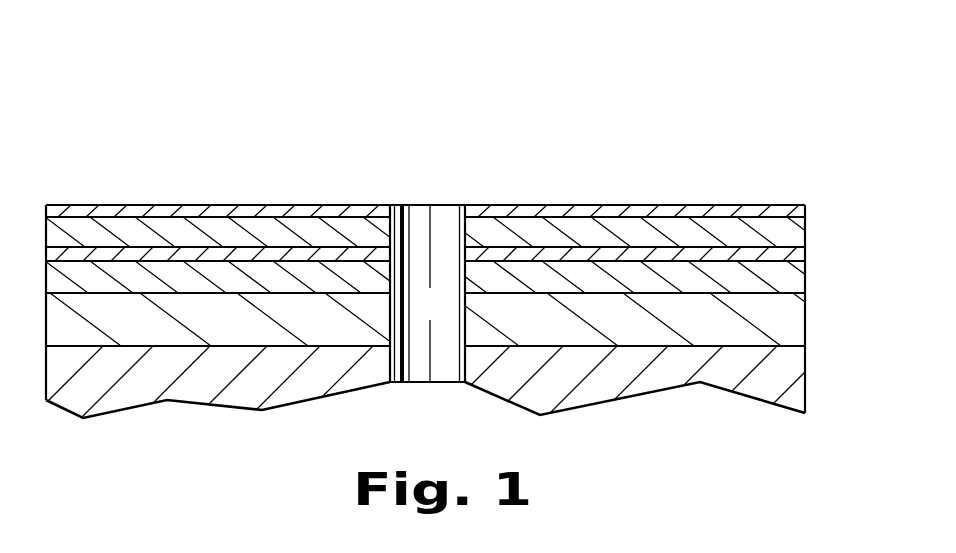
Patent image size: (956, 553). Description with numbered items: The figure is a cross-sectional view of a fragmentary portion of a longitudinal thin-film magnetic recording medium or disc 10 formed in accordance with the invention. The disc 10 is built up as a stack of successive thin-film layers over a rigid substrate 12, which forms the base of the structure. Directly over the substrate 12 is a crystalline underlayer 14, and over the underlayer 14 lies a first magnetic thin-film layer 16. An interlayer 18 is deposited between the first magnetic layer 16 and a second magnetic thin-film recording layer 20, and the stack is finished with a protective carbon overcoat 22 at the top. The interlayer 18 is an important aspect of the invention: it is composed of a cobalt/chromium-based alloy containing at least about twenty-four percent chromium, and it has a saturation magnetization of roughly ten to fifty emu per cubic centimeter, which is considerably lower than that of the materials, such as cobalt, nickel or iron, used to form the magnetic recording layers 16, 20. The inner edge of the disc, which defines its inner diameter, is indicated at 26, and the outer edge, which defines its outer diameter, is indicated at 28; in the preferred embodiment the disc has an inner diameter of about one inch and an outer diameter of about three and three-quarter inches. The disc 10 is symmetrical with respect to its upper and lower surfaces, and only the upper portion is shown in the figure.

The thin-film medium or disc 10 is at (663, 91).
The rigid substrate 12 is at (723, 375).
The crystalline underlayer 14 is at (720, 329).
The first magnetic thin-film layer 16 is at (787, 272).
The interlayer 18 is at (792, 260).
The second magnetic thin-film recording layer 20 is at (798, 228).
The protective carbon overcoat 22 is at (515, 205).
The inner edge of the disc 26 is at (465, 377).
The outer edge of the disc 28 is at (805, 377).